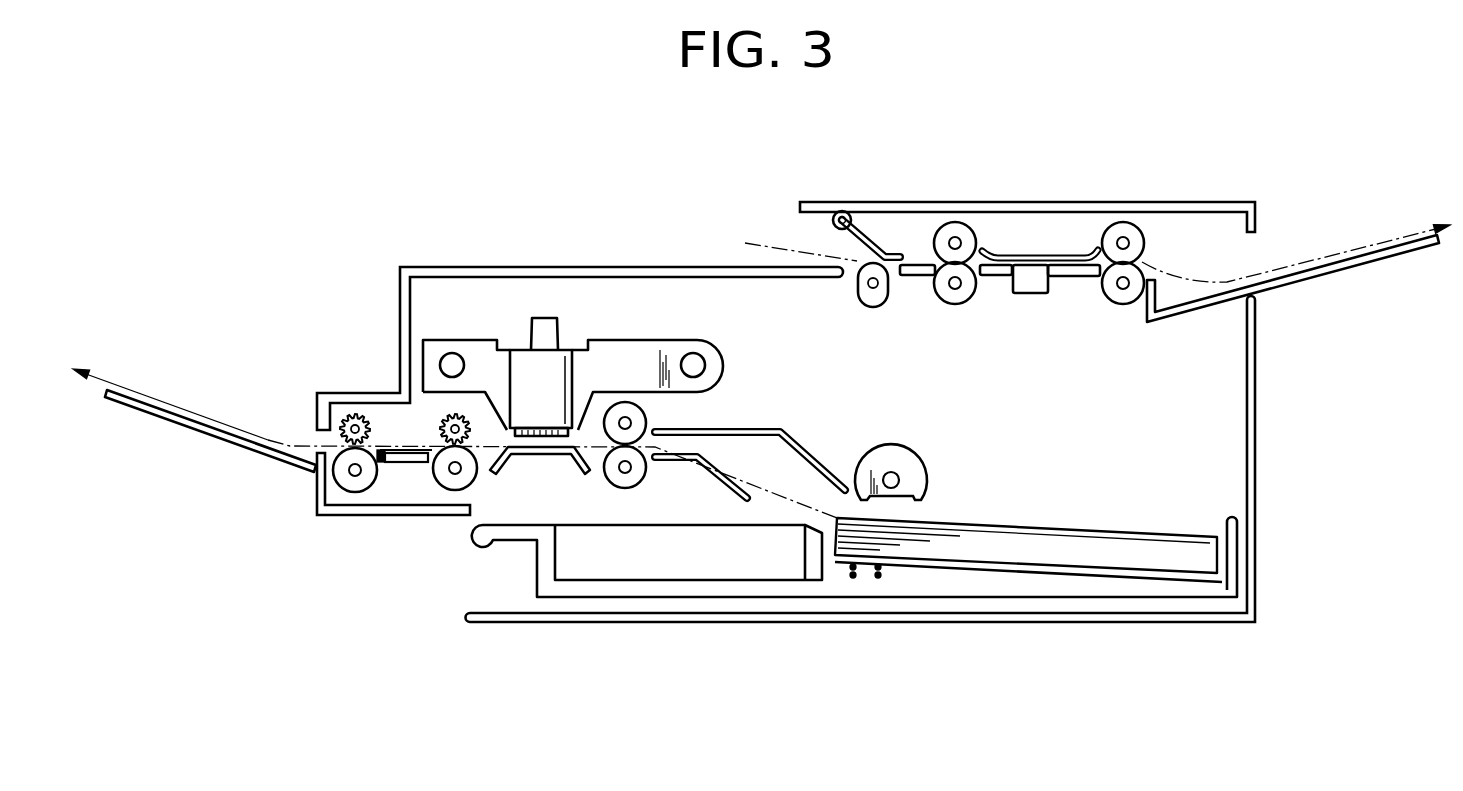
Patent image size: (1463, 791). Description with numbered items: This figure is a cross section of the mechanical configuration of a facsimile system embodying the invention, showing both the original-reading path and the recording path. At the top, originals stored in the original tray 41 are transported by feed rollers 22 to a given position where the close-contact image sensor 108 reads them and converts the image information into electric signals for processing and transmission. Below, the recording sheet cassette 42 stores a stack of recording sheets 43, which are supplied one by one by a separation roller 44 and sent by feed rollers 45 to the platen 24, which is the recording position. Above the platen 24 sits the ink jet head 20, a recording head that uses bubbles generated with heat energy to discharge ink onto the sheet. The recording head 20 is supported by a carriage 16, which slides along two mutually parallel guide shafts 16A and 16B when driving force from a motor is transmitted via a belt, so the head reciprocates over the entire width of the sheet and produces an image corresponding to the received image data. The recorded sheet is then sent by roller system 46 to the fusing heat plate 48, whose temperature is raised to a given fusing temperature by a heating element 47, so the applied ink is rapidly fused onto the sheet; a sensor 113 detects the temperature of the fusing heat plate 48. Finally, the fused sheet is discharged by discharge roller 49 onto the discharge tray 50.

The carriage 16 is at (633, 353).
The guide shaft 16A is at (452, 362).
The guide shaft 16B is at (700, 362).
The ink jet head 20 is at (522, 355).
The feed rollers 22 is at (955, 304).
The platen 24 is at (515, 458).
The original tray 41 is at (1340, 268).
The recording sheet cassette 42 is at (647, 588).
The recording sheets 43 is at (988, 553).
The separation roller 44 is at (928, 480).
The feed rollers 45 is at (617, 490).
The roller system 46 is at (453, 484).
The heating element 47 is at (406, 463).
The fusing heat plate 48 is at (380, 466).
The discharge roller 49 is at (340, 474).
The discharge tray 50 is at (173, 420).
The close-contact image sensor 108 is at (1023, 262).
The sensor 113 is at (377, 449).